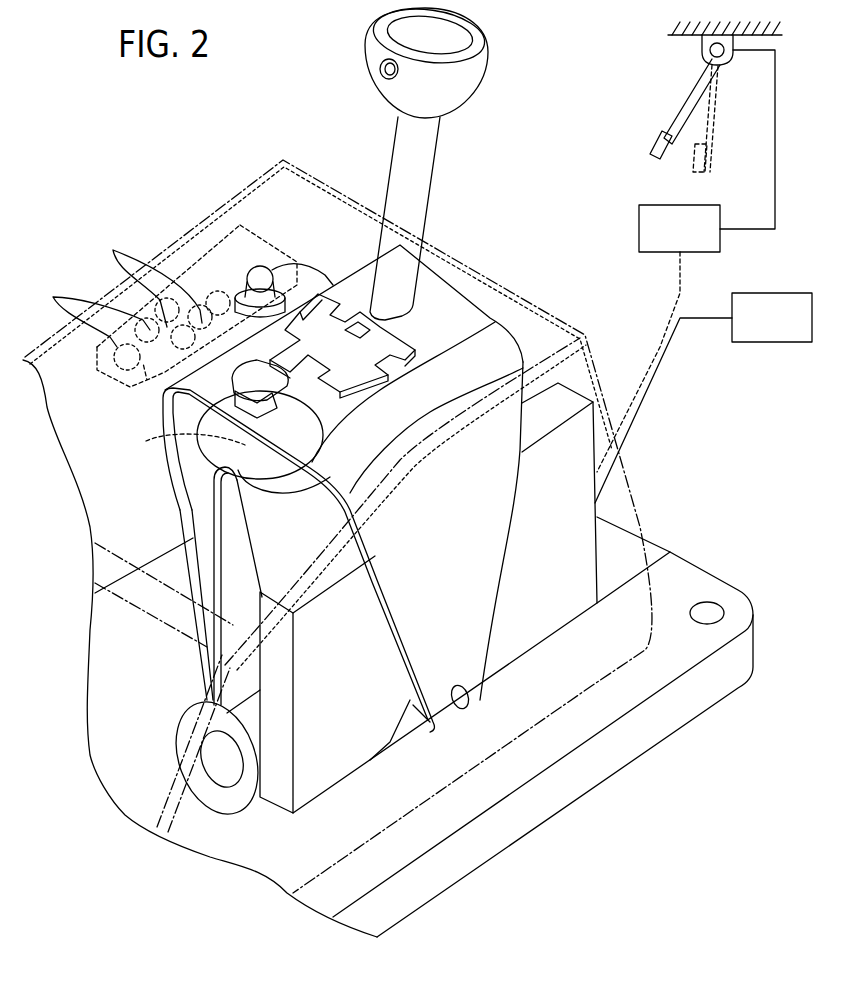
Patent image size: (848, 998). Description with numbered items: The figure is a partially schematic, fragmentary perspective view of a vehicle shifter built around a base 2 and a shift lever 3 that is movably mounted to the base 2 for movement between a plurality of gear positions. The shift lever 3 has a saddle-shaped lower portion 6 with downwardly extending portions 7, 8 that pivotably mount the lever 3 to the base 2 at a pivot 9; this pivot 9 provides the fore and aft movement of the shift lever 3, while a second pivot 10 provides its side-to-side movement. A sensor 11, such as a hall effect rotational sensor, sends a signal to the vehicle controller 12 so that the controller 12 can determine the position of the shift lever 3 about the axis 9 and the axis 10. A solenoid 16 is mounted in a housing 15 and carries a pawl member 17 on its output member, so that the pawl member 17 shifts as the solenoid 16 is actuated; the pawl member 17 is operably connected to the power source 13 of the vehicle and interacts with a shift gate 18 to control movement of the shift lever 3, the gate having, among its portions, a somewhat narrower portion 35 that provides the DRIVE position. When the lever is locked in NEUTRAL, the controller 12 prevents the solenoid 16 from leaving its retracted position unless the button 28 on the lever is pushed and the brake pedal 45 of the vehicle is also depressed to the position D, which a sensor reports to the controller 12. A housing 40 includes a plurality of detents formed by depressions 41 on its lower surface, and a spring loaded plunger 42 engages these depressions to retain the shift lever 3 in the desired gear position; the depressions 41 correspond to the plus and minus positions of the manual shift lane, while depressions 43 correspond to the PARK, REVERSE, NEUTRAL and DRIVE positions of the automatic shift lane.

The base 2 is at (700, 567).
The shift lever 3 is at (432, 183).
The saddle-shaped lower portion 6 is at (523, 340).
The downwardly extending portion 7 is at (187, 458).
The downwardly extending portion 8 is at (478, 585).
The pivot 9 is at (467, 713).
The second pivot 10 is at (210, 757).
The sensor 11 is at (320, 783).
The vehicle controller 12 is at (707, 247).
The power source 13 is at (760, 331).
The housing 15 is at (265, 512).
The solenoid 16 is at (181, 443).
The pawl member 17 is at (193, 392).
The shift gate 18 is at (330, 357).
The button 28 is at (383, 70).
The narrower portion 35 is at (362, 340).
The housing 40 is at (588, 337).
The depressions 41 is at (167, 306).
The spring loaded plunger 42 is at (258, 282).
The depressions 43 is at (162, 277).
The brake pedal 45 is at (686, 103).
The depressed position D is at (703, 176).